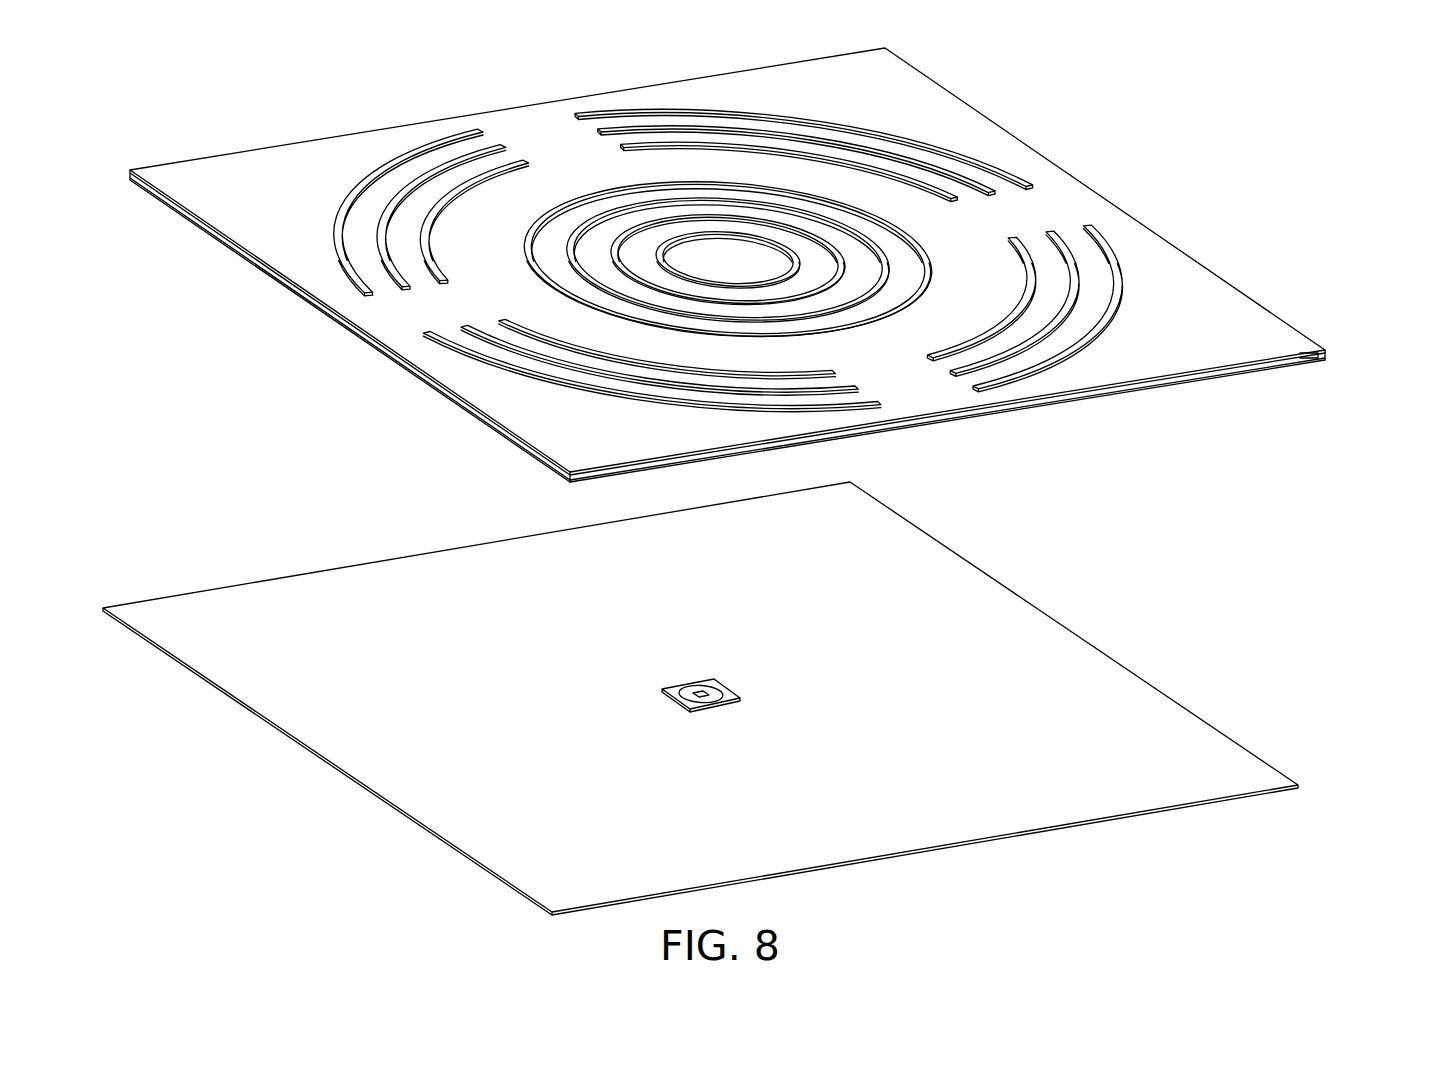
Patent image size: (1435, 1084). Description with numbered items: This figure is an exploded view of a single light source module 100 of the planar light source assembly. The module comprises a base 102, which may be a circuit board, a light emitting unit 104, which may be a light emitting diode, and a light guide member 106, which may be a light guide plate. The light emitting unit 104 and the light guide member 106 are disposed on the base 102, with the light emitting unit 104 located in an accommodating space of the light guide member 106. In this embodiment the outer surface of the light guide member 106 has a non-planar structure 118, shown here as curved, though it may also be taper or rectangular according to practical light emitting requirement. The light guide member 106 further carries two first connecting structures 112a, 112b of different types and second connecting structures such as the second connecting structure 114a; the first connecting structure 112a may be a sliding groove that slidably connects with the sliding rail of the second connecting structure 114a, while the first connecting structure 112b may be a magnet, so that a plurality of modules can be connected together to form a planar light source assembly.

The light source module 100 is at (240, 108).
The base 102 is at (928, 848).
The light emitting unit 104 is at (655, 698).
The light guide member 106 is at (903, 92).
The first connecting structure 112a is at (356, 317).
The first connecting structure 112b is at (1095, 394).
The second connecting structure 114a is at (1330, 357).
The non-planar structure 118 is at (940, 143).